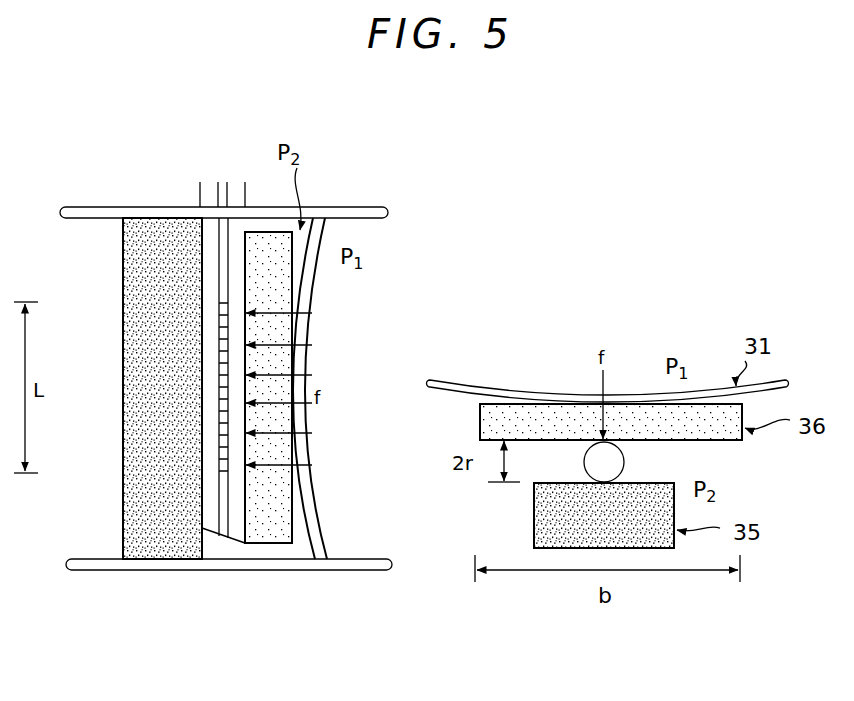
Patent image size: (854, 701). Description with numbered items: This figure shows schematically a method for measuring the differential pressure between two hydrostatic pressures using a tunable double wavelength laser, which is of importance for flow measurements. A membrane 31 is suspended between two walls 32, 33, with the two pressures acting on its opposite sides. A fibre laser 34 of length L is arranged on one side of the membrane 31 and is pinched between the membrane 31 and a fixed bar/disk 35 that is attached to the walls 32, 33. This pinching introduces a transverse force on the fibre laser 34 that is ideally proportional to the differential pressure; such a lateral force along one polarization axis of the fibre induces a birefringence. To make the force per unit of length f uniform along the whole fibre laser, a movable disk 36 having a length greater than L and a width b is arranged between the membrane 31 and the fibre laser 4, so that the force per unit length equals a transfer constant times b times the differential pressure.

The fibre laser 4 is at (627, 461).
The membrane 31 is at (327, 535).
The wall 32 is at (97, 206).
The wall 33 is at (253, 572).
The fibre laser 34 is at (218, 448).
The fixed bar/disk 35 is at (122, 524).
The movable disk 36 is at (298, 549).